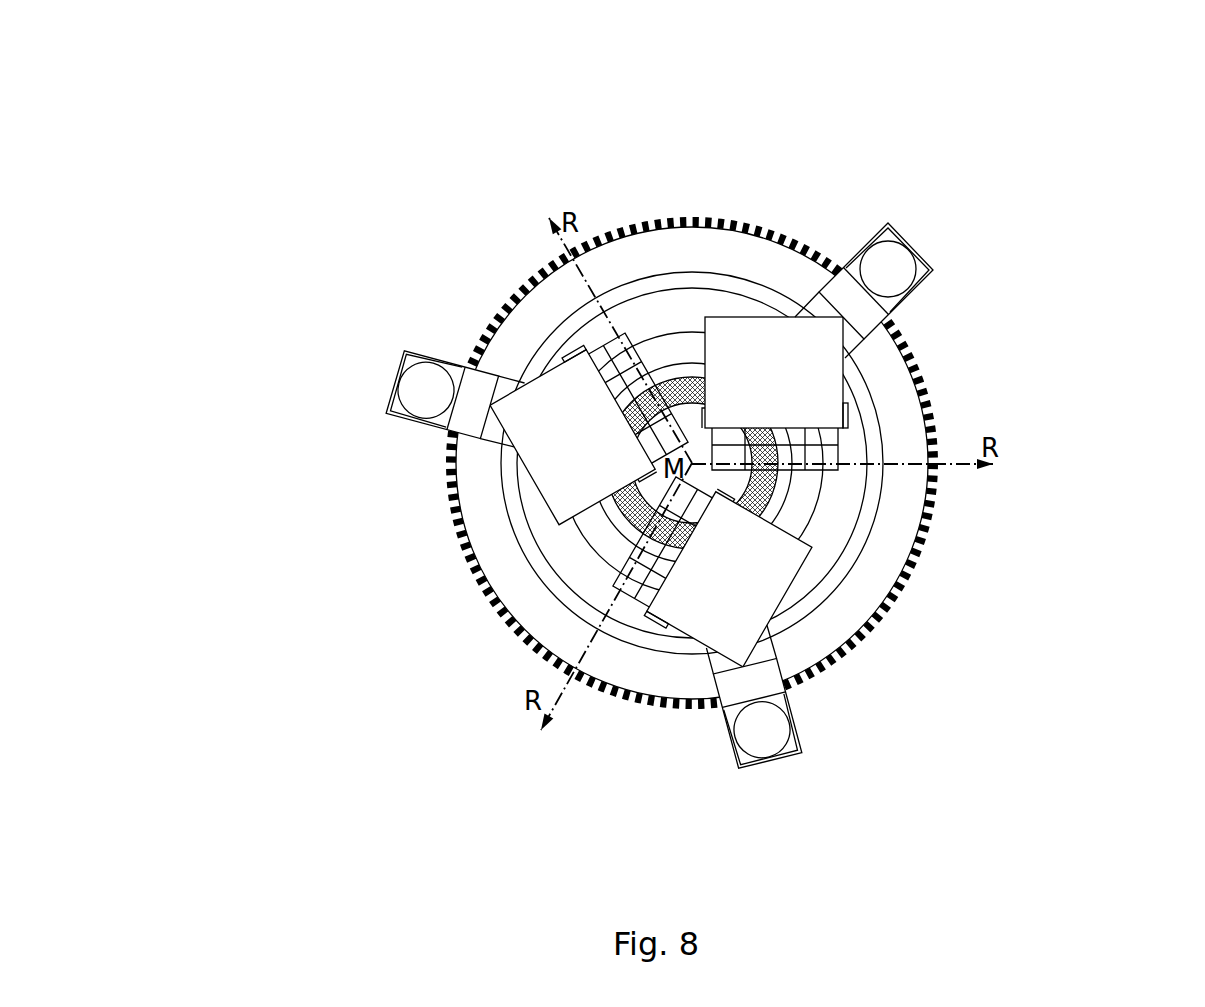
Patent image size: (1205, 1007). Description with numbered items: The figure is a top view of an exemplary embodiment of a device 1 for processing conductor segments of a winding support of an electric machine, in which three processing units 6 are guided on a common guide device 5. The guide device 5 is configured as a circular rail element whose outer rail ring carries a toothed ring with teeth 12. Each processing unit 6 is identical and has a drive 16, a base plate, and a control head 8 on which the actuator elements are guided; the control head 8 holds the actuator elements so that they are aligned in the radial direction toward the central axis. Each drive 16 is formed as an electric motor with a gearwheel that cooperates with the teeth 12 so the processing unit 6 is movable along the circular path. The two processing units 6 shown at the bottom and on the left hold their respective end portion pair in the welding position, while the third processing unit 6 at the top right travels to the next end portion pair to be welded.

The device 1 is at (985, 190).
The guide device 5 is at (828, 528).
The processing unit 6 is at (808, 317).
The control head 8 is at (812, 378).
The teeth 12 is at (902, 337).
The drive 16 is at (888, 267).